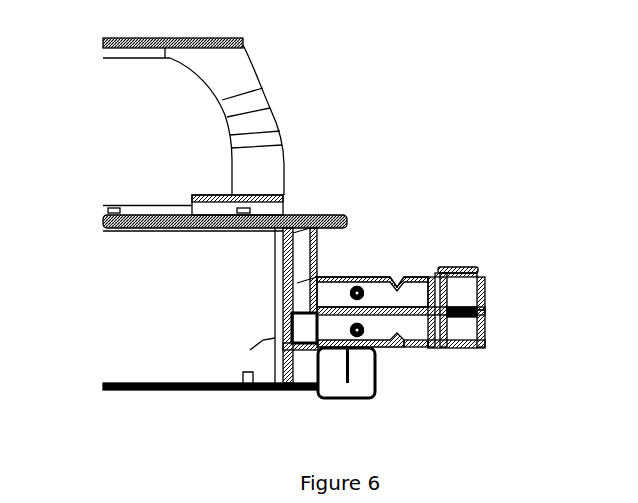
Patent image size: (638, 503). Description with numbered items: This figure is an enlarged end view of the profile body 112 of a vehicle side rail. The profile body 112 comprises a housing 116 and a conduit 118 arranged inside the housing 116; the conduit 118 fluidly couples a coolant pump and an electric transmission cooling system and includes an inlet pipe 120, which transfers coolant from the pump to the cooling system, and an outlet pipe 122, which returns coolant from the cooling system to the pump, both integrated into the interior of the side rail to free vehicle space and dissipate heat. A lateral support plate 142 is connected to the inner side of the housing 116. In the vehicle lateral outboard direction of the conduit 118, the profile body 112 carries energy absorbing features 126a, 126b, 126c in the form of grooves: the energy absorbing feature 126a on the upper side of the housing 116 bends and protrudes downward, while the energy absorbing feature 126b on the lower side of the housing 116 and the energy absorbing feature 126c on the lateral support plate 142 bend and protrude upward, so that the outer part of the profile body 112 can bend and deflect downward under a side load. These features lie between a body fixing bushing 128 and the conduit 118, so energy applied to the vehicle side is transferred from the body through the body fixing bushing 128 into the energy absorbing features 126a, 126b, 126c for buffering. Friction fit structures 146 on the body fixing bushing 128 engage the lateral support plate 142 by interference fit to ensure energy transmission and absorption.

The profile body 112 is at (409, 82).
The housing 116 is at (487, 342).
The conduit 118 is at (241, 326).
The inlet pipe 120 is at (348, 291).
The outlet pipe 122 is at (348, 331).
The energy absorbing feature 126a is at (397, 280).
The energy absorbing feature 126b is at (395, 346).
The energy absorbing feature 126c is at (420, 350).
The body fixing bushing 128 is at (463, 268).
The lateral support plate 142 is at (485, 293).
The friction fit structure 146 is at (485, 320).